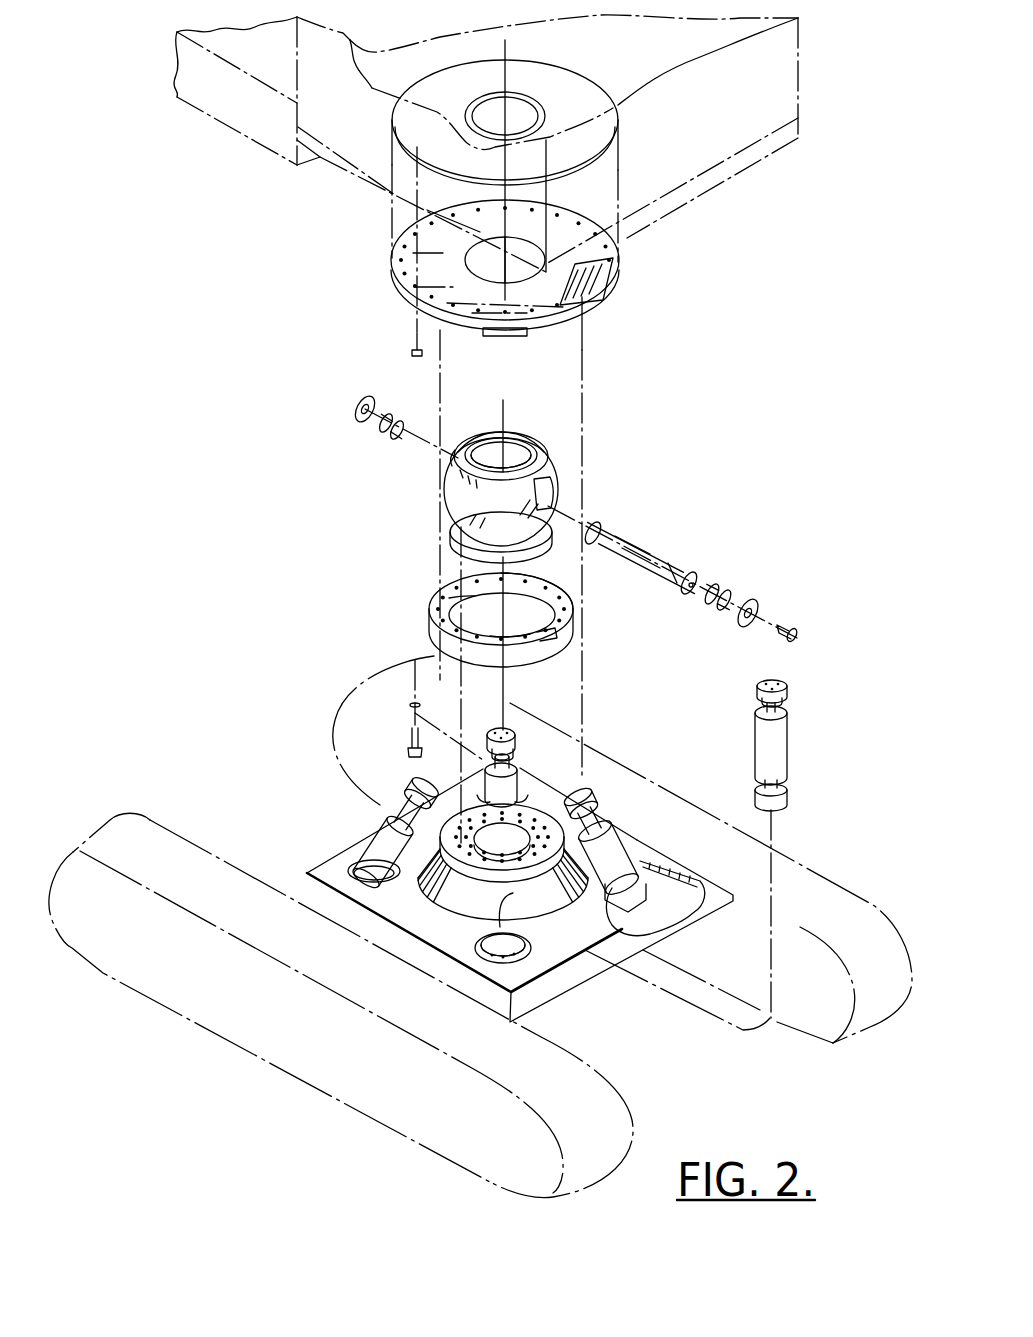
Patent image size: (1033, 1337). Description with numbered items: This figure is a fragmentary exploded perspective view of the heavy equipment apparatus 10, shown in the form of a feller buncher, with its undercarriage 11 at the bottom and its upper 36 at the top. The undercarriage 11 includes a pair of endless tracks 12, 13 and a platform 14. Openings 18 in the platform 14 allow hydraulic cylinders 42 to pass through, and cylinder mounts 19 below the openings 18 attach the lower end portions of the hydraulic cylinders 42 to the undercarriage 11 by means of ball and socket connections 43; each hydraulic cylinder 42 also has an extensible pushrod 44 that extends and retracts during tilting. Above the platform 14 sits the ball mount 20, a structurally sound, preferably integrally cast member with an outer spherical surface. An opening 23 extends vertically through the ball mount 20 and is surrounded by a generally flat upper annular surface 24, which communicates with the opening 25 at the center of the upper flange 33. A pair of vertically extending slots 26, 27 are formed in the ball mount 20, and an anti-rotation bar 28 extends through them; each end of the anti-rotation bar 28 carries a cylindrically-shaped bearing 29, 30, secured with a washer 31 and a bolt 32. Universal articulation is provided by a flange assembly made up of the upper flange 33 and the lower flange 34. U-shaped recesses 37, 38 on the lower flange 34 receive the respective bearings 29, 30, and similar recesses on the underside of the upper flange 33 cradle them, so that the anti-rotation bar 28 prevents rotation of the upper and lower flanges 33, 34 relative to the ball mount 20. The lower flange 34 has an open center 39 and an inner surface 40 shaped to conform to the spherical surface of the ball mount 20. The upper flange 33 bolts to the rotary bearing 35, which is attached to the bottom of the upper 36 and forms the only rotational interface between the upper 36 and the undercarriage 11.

The heavy equipment apparatus 10 is at (178, 382).
The undercarriage 11 is at (154, 818).
The endless track 12 is at (175, 1012).
The endless track 13 is at (395, 734).
The platform 14 is at (717, 898).
The openings 18 is at (361, 863).
The cylinder mounts 19 is at (518, 948).
The ball mount 20 is at (558, 470).
The opening 23 is at (490, 445).
The upper annular surface 24 is at (524, 428).
The opening 25 is at (493, 264).
The slot 26 is at (553, 490).
The slot 27 is at (465, 440).
The anti-rotation bar 28 is at (657, 557).
The bearing 29 is at (390, 437).
The bearing 30 is at (709, 606).
The washer 31 is at (355, 412).
The bolt 32 is at (797, 633).
The upper flange 33 is at (393, 288).
The lower flange 34 is at (430, 612).
The rotary bearing 35 is at (572, 73).
The upper 36 is at (800, 106).
The U-shaped recess 37 is at (452, 594).
The U-shaped recess 38 is at (560, 645).
The open center 39 is at (518, 616).
The inner surface 40 is at (575, 593).
The hydraulic cylinder 42 is at (518, 778).
The ball and socket connections 43 is at (782, 693).
The extensible pushrod 44 is at (411, 806).